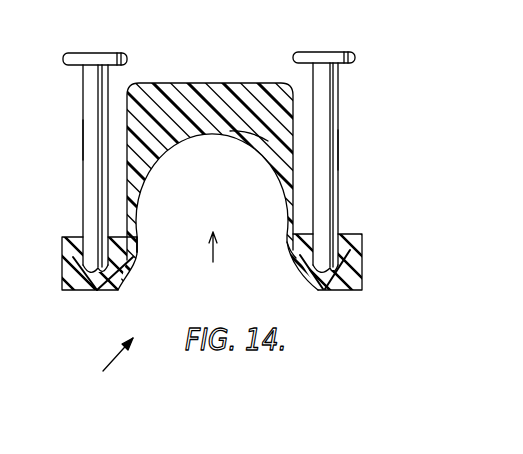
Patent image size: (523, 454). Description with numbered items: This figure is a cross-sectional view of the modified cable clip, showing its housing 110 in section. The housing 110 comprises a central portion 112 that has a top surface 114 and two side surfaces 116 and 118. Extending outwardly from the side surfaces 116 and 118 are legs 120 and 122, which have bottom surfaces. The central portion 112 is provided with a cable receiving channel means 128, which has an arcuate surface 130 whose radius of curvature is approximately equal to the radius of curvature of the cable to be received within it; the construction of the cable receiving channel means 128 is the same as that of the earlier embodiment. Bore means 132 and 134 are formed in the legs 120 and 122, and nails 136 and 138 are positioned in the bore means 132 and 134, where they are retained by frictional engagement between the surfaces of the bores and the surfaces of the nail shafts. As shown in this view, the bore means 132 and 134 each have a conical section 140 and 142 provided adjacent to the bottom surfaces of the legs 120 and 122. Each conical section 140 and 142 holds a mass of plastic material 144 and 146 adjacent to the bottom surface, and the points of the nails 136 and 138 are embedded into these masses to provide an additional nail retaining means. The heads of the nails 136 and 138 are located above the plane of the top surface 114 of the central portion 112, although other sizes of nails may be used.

The housing 110 is at (106, 367).
The central portion 112 is at (190, 131).
The top surface 114 is at (193, 84).
The side surface 116 is at (125, 104).
The side surface 118 is at (292, 107).
The leg 120 is at (62, 258).
The leg 122 is at (363, 254).
The cable receiving channel means 128 is at (208, 266).
The arcuate surface 130 is at (247, 133).
The bore means 132 is at (138, 257).
The bore means 134 is at (300, 251).
The nail 136 is at (93, 139).
The nail 138 is at (327, 151).
The conical section 140 is at (83, 292).
The conical section 142 is at (333, 290).
The mass of plastic material 144 is at (98, 292).
The mass of plastic material 146 is at (326, 292).